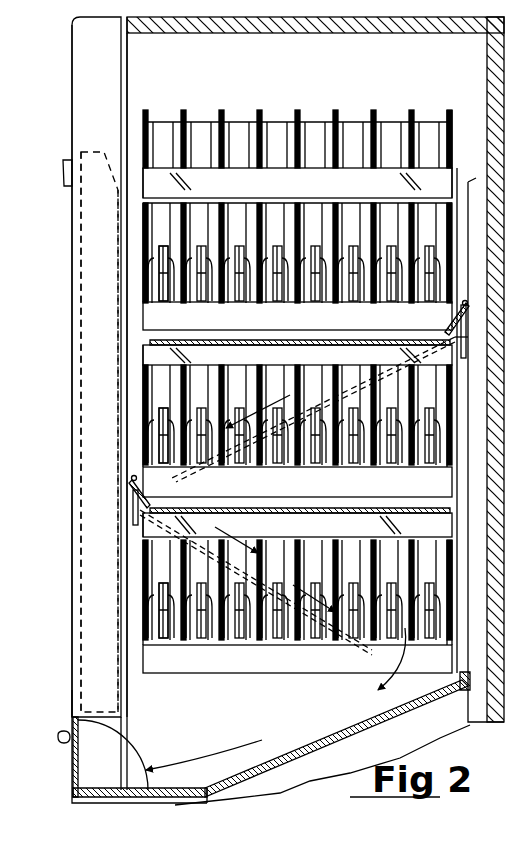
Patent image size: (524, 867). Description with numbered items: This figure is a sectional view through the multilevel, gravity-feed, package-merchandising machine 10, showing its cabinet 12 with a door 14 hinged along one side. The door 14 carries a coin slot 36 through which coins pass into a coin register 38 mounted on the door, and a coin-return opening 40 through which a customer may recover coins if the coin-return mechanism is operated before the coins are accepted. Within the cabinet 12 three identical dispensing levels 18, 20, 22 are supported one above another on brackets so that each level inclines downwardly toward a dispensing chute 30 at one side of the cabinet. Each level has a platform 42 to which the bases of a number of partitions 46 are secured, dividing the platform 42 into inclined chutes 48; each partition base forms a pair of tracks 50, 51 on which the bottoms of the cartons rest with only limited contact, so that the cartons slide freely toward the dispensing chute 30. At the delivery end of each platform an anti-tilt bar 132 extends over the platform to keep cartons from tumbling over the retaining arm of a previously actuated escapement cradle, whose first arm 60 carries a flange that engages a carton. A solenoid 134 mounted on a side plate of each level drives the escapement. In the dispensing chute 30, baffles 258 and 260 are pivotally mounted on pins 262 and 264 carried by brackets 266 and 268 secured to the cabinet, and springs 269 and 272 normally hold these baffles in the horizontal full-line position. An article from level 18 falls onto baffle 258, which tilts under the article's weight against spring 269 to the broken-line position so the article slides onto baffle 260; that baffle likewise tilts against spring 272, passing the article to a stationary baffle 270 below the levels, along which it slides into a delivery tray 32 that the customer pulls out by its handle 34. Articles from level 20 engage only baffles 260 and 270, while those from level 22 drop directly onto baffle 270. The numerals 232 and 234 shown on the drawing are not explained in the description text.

The multilevel, gravity-feed, package-merchandising machine 10 is at (66, 88).
The cabinet 12 is at (0, 270).
The door 14 is at (70, 302).
The dispensing level 18 is at (453, 148).
The dispensing level 20 is at (100, 435).
The dispensing level 22 is at (100, 606).
The dispensing chute 30 is at (0, 386).
The delivery tray 32 is at (72, 768).
The handle 34 is at (60, 736).
The coin slot 36 is at (63, 178).
The coin register 38 is at (70, 416).
The coin-return opening 40 is at (70, 690).
The platform 42 is at (298, 125).
The partitions 46 is at (234, 118).
The inclined chutes 48 is at (163, 140).
The track 50 is at (172, 306).
The track 51 is at (196, 306).
The first arm 60 is at (430, 606).
The anti-tilt bar 132 is at (437, 196).
The solenoid 134 is at (143, 216).
The delivery path 232 is at (320, 358).
The middle rack rail 234 is at (143, 380).
The baffle 258 is at (358, 305).
The baffle 260 is at (338, 496).
The pin 262 is at (3, 323).
The pin 264 is at (130, 478).
The bracket 266 is at (462, 362).
The bracket 268 is at (130, 520).
The spring 269 is at (466, 340).
The stationary baffle 270 is at (300, 726).
The spring 272 is at (183, 470).